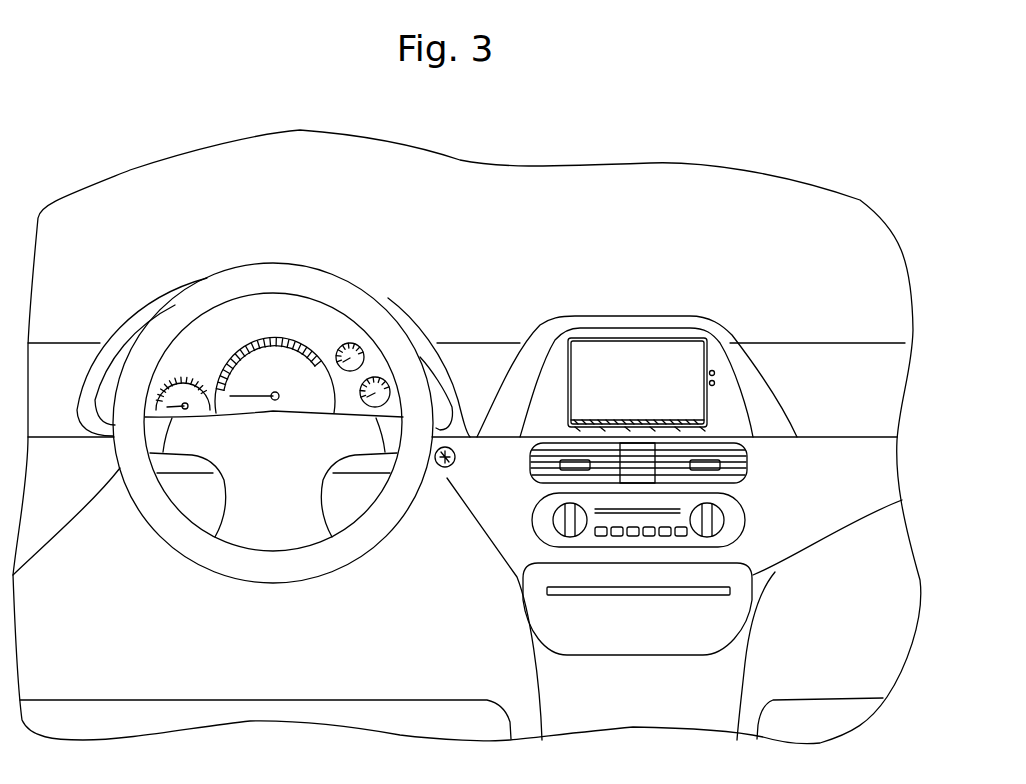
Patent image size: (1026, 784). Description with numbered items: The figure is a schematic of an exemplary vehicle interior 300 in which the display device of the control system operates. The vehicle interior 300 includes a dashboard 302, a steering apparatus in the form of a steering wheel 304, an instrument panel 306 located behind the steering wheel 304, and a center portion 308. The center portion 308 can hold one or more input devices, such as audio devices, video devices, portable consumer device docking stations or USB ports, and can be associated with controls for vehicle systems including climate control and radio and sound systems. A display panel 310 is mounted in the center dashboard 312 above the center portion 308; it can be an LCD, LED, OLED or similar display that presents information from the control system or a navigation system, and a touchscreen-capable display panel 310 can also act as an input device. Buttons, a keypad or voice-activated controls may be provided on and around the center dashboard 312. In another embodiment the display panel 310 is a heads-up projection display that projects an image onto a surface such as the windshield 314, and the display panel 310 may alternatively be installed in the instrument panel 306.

The vehicle interior 300 is at (865, 200).
The dashboard 302 is at (487, 363).
The steering wheel 304 is at (210, 297).
The instrument panel 306 is at (283, 318).
The center portion 308 is at (525, 493).
The display panel 310 is at (642, 337).
The center dashboard 312 is at (705, 318).
The windshield 314 is at (378, 250).